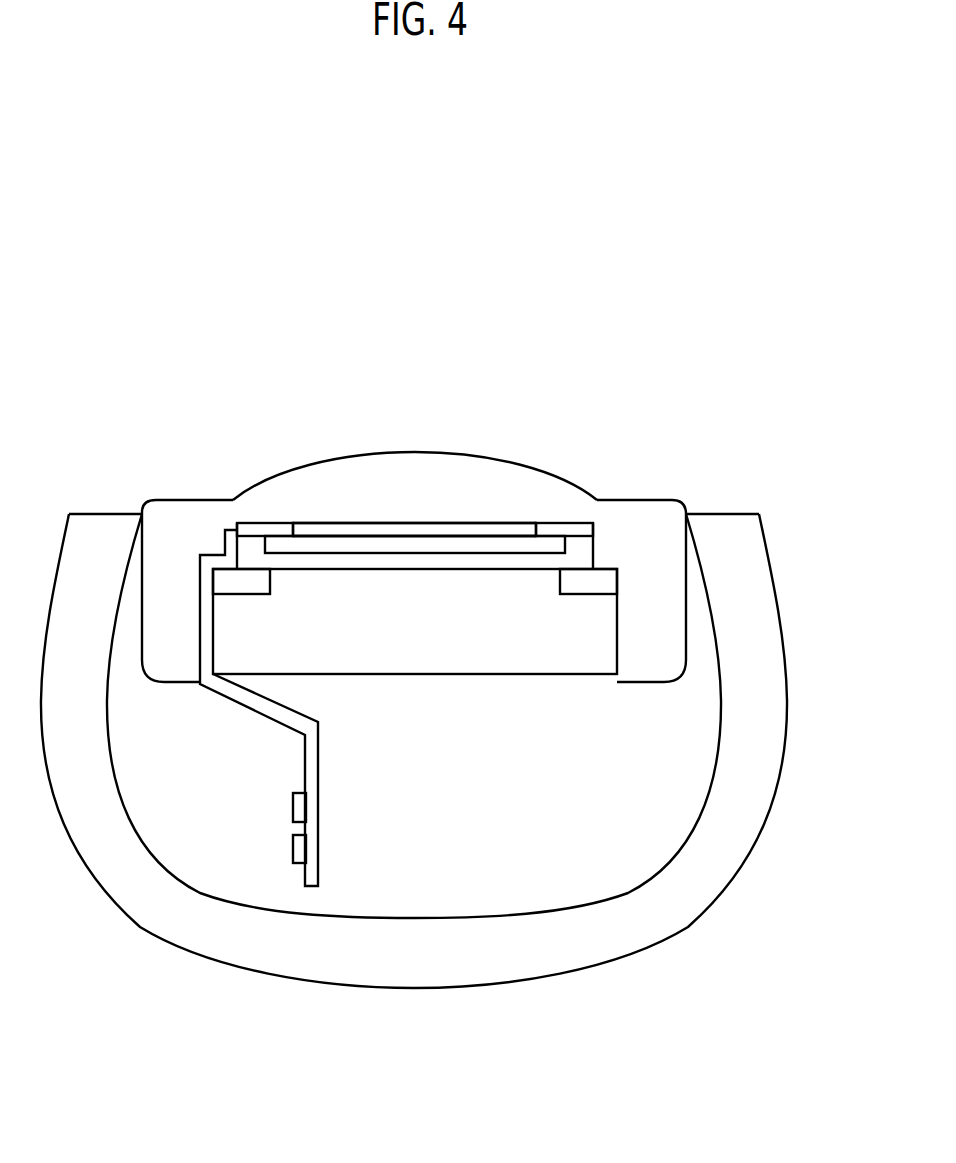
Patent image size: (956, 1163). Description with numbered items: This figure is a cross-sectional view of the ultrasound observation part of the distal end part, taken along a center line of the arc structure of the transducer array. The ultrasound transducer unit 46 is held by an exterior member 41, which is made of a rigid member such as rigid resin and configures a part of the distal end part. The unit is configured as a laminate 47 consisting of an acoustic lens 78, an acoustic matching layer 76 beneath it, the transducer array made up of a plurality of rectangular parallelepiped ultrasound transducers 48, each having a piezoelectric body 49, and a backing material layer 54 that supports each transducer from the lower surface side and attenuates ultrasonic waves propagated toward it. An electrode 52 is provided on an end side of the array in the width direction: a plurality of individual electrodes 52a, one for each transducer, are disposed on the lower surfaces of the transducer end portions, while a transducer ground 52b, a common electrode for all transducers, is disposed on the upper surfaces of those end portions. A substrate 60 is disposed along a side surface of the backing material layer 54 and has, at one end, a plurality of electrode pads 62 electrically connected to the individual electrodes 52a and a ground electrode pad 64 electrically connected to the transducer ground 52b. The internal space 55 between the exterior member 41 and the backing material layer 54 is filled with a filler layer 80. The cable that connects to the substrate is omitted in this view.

The exterior member 41 is at (783, 711).
The ultrasound transducer unit 46 is at (546, 389).
The laminate 47 is at (193, 478).
The ultrasound transducer 48 is at (325, 545).
The piezoelectric body 49 is at (357, 545).
The electrode 52 is at (245, 521).
The individual electrode 52a is at (238, 588).
The transducer ground 52b is at (265, 528).
The backing material layer 54 is at (428, 638).
The internal space 55 is at (439, 808).
The substrate 60 is at (238, 695).
The electrode pad 62 is at (293, 808).
The ground electrode pad 64 is at (293, 848).
The acoustic matching layer 76 is at (415, 530).
The acoustic lens 78 is at (468, 468).
The filler layer 80 is at (631, 810).